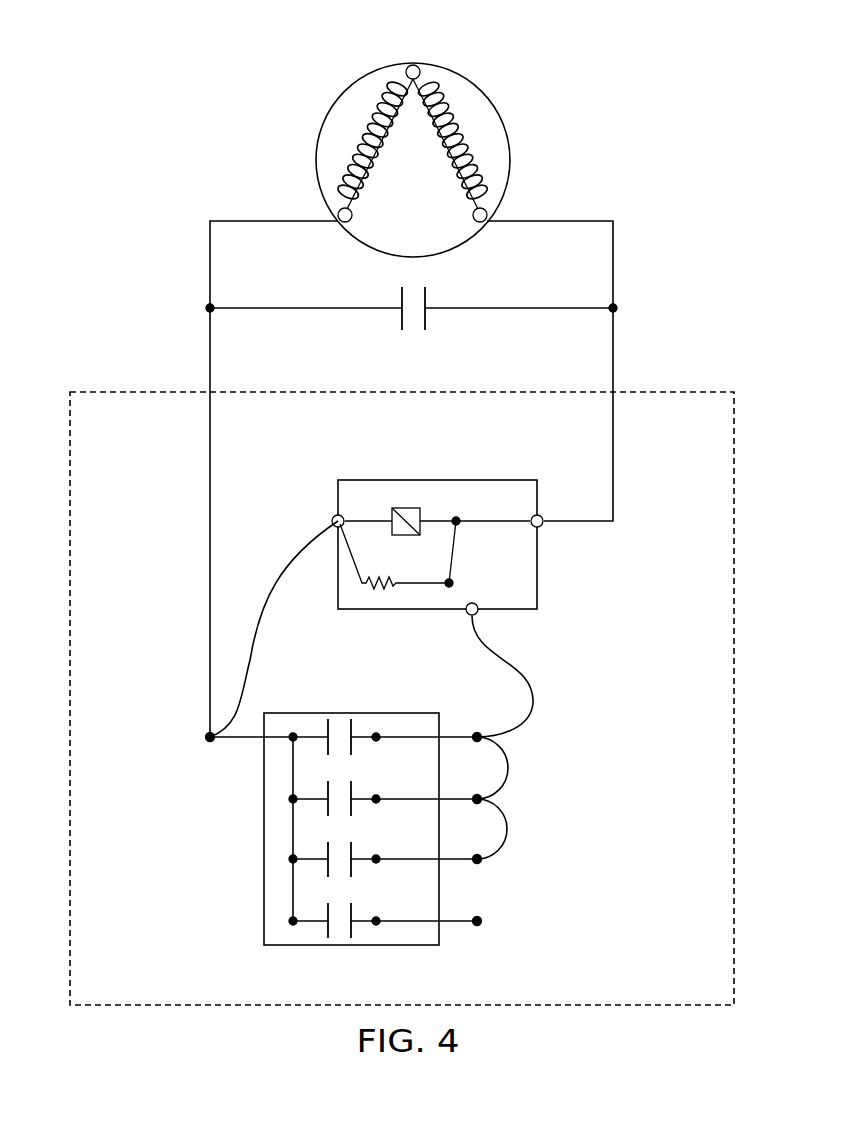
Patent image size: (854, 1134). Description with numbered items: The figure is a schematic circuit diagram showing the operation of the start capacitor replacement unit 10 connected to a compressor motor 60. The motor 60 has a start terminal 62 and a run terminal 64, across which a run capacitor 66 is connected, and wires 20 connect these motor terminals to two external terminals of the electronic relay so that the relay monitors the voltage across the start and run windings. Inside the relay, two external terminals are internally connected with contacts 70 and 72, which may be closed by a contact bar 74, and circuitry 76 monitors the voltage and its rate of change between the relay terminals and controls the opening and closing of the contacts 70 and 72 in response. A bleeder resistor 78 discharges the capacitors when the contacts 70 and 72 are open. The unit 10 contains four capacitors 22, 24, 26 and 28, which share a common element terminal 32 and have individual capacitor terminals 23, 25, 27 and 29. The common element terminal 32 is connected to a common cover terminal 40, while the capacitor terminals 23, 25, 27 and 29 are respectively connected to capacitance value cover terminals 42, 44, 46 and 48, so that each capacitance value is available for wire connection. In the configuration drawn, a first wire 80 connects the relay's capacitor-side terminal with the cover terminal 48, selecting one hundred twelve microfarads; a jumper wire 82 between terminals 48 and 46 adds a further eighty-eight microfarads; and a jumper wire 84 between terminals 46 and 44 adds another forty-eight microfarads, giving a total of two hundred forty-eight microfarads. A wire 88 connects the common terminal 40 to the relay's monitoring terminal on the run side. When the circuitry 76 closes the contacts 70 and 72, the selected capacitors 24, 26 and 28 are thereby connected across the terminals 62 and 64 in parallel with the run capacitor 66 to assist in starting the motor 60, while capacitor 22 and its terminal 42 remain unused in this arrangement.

The start capacitor replacement unit 10 is at (105, 392).
The wires 20 is at (210, 349).
The capacitor 22 is at (328, 912).
The capacitor terminal 23 is at (376, 919).
The capacitor 24 is at (328, 850).
The capacitor terminal 25 is at (376, 857).
The capacitor 26 is at (328, 789).
The capacitor terminal 27 is at (376, 797).
The capacitor 28 is at (328, 725).
The capacitor terminal 29 is at (378, 742).
The common element terminal 32 is at (293, 851).
The common cover terminal 40 is at (210, 737).
The capacitance value cover terminal 42 is at (476, 920).
The capacitance value cover terminal 44 is at (475, 857).
The capacitance value cover terminal 46 is at (475, 797).
The capacitance value cover terminal 48 is at (475, 735).
The compressor motor 60 is at (503, 114).
The start terminal 62 is at (487, 212).
The run terminal 64 is at (338, 210).
The run capacitor 66 is at (428, 296).
The contact 70 is at (453, 581).
The contact 72 is at (455, 519).
The contact bar 74 is at (452, 545).
The circuitry 76 is at (398, 508).
The bleeder resistor 78 is at (384, 586).
The first wire 80 is at (510, 664).
The jumper wire 82 is at (506, 767).
The jumper wire 84 is at (506, 829).
The wire 88 is at (268, 597).